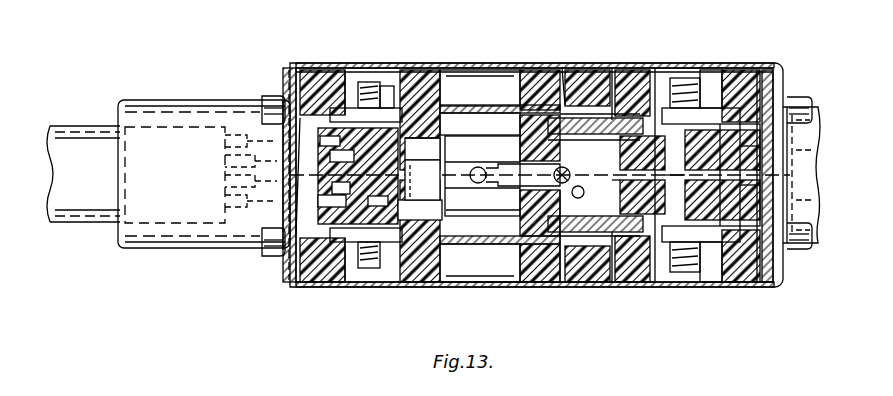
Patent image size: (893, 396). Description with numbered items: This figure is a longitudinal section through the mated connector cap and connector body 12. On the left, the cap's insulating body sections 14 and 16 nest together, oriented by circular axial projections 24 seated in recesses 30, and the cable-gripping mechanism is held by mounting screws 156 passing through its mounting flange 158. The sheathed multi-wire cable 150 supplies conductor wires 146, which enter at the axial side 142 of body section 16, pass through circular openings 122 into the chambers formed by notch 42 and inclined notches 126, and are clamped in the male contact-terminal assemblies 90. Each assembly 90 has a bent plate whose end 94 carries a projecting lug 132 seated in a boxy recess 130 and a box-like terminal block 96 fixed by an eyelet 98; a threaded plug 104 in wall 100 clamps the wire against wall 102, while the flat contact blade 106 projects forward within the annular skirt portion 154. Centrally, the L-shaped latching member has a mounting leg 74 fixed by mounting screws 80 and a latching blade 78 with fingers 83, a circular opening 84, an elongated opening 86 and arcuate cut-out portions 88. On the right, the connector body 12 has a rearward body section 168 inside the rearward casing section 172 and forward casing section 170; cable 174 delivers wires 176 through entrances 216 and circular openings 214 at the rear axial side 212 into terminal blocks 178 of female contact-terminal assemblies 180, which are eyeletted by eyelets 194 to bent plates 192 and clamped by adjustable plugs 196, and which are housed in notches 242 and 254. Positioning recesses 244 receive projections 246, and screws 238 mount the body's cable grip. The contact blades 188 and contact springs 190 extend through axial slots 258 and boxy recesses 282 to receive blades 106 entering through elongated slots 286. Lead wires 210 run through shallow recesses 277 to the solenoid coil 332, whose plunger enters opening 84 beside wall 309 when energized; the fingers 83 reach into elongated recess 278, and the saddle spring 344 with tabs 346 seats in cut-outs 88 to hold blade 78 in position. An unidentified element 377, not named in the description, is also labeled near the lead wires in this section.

The connector body 12 is at (696, 62).
The body section 14 is at (448, 64).
The body section 16 is at (322, 70).
The circular axial projections 24 is at (358, 176).
The circular axial recesses 30 is at (341, 188).
The notch 42 is at (350, 70).
The mounting leg 74 is at (422, 180).
The latching blade 78 is at (460, 166).
The mounting screws 80 is at (422, 149).
The fingers 83 is at (483, 221).
The circular opening 84 is at (478, 166).
The elongated opening 86 is at (476, 178).
The arcuate cut-out portions 88 is at (502, 164).
The male power transmitting contact-terminal assemblies 90 is at (500, 177).
The end 94 is at (420, 210).
The terminal block 96 is at (370, 82).
The eyelet 98 is at (366, 175).
The wall 100 is at (394, 86).
The wall 102 is at (342, 156).
The threaded plug 104 is at (372, 82).
The contact blade 106 is at (482, 106).
The circular openings 122 is at (310, 66).
The inclined notches 126 is at (436, 58).
The boxy recesses 130 is at (332, 201).
The projecting lugs 132 is at (354, 171).
The axial side 142 is at (300, 186).
The conductor wires 146 is at (330, 66).
The multi-wire electrical cable 150 is at (88, 140).
The skirt portion 154 is at (489, 64).
The mounting screws 156 is at (262, 96).
The mounting flange 158 is at (284, 66).
The rearward body section 168 is at (756, 70).
The forward casing section 170 is at (566, 70).
The rearward casing section 172 is at (656, 68).
The multi-wire electrical cable 174 is at (800, 104).
The wires 176 is at (730, 70).
The terminal blocks 178 is at (710, 68).
The female contact-terminal assemblies 180 is at (650, 58).
The contact blades 188 is at (601, 70).
The contact springs 190 is at (562, 283).
The bent plates 192 is at (691, 175).
The eyelets 194 is at (717, 175).
The adjustable plugs 196 is at (716, 284).
The lead wires 210 is at (601, 175).
The rear axial side 212 is at (671, 183).
The circular openings 214 is at (745, 194).
The entrances 216 is at (747, 170).
The screws 238 is at (798, 96).
The notches 242 is at (740, 68).
The positioning recesses 244 is at (738, 152).
The axial projections 246 is at (737, 185).
The notches 254 is at (676, 78).
The axial slots 258 is at (616, 68).
The shallow recesses 277 is at (600, 223).
The elongated recess 278 is at (630, 185).
The boxy recesses 282 is at (554, 70).
The elongated slots 286 is at (520, 116).
The wall 309 is at (642, 175).
The solenoid coil 332 is at (536, 175).
The saddle spring 344 is at (594, 140).
The tabs 346 is at (570, 183).
The rod 377 is at (600, 123).